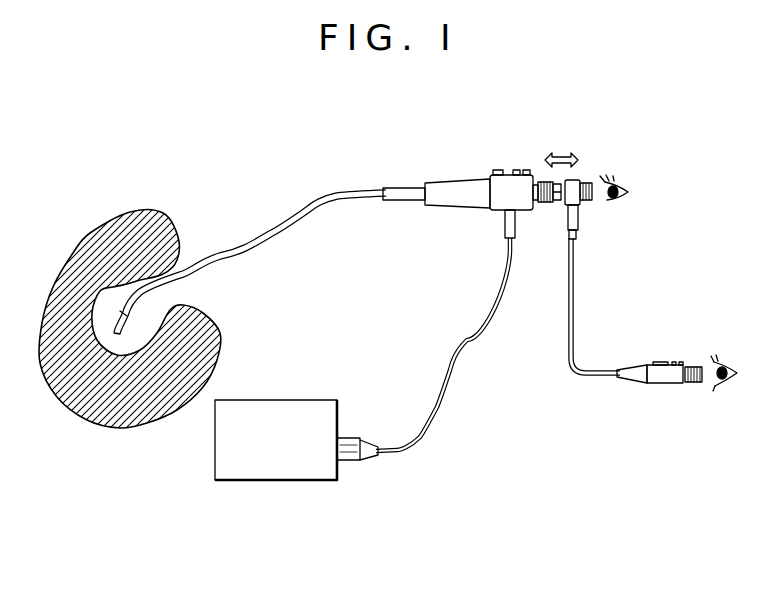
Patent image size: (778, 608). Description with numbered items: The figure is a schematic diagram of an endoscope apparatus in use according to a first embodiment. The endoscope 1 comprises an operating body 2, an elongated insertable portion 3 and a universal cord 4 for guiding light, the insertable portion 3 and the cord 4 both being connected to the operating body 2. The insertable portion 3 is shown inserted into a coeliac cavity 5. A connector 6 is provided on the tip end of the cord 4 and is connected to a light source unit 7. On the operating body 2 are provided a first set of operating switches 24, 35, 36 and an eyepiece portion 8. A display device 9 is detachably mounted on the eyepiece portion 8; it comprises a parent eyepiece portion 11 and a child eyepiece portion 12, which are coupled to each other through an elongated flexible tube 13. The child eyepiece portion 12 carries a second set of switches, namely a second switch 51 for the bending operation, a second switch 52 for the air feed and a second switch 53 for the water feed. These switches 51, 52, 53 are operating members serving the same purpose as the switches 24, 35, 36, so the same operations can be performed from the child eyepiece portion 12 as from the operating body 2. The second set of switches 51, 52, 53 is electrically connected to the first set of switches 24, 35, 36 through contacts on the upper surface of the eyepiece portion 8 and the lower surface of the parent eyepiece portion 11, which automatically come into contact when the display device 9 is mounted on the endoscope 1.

The endoscope 1 is at (390, 171).
The operating body 2 is at (462, 209).
The elongated insertable portion 3 is at (317, 203).
The universal cord 4 is at (487, 315).
The coeliac cavity 5 is at (112, 286).
The connector 6 is at (352, 445).
The light source unit 7 is at (310, 408).
The eyepiece portion 8 is at (543, 203).
The display device 9 is at (594, 302).
The parent eyepiece portion 11 is at (576, 181).
The child eyepiece portion 12 is at (672, 376).
The elongated flexible tube 13 is at (568, 347).
The operating switch 24 is at (497, 170).
The operating switch 35 is at (517, 170).
The operating switch 36 is at (527, 170).
The second switch for the bending operation 51 is at (660, 362).
The second switch for the air feed 52 is at (676, 362).
The second switch for the water feed 53 is at (682, 362).